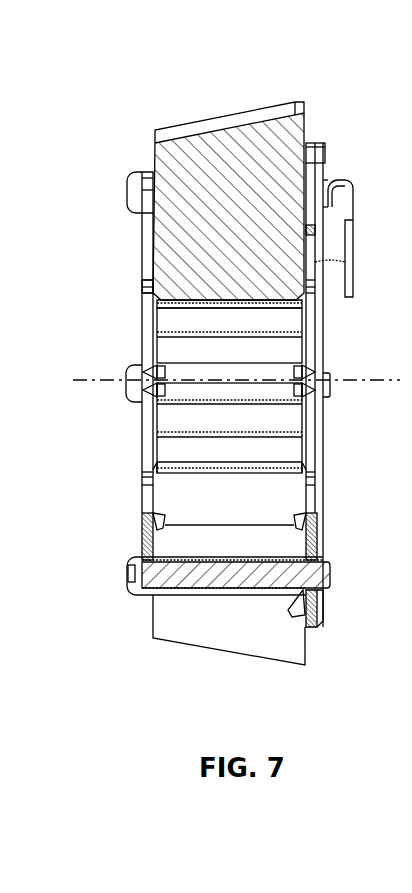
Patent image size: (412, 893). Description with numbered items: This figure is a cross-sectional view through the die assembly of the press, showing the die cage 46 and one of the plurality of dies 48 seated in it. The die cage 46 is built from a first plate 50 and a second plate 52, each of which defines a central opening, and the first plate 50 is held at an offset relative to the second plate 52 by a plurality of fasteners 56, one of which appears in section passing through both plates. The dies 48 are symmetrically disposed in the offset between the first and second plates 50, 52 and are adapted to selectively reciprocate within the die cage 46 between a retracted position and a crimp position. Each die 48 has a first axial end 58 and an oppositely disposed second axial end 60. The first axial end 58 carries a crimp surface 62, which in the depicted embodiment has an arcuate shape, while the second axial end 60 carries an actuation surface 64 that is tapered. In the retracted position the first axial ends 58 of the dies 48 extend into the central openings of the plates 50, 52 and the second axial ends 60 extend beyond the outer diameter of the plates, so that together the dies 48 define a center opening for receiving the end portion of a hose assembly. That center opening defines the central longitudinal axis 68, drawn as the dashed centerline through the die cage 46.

The die cage 46 is at (130, 335).
The die 48 is at (149, 203).
The first plate 50 is at (142, 537).
The second plate 52 is at (317, 537).
The fastener 56 is at (133, 573).
The first axial end 58 is at (150, 280).
The second axial end 60 is at (150, 148).
The crimp surface 62 is at (198, 297).
The actuation surface 64 is at (235, 130).
The central longitudinal axis 68 is at (90, 381).